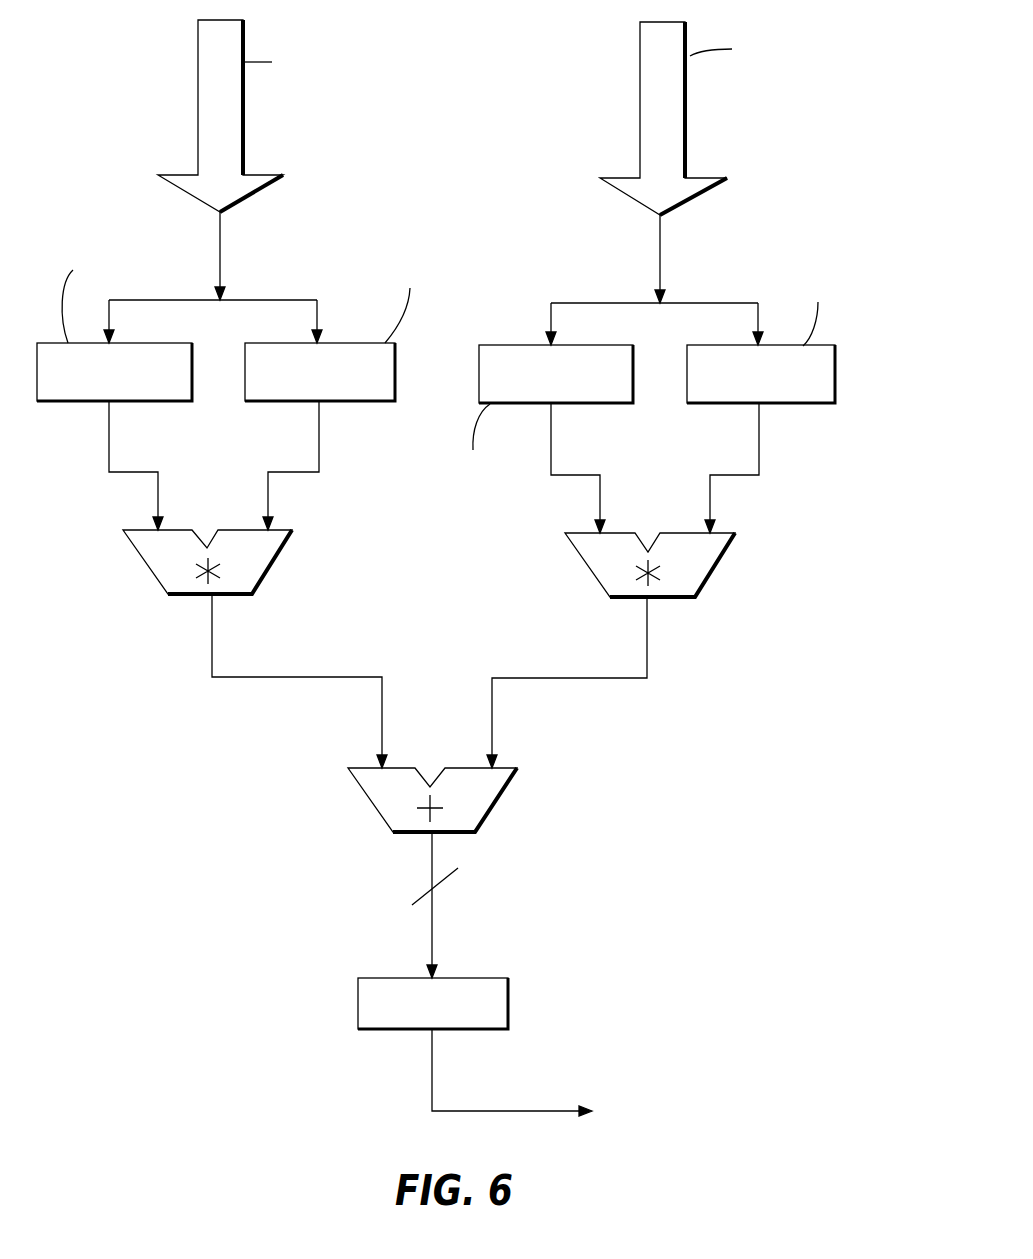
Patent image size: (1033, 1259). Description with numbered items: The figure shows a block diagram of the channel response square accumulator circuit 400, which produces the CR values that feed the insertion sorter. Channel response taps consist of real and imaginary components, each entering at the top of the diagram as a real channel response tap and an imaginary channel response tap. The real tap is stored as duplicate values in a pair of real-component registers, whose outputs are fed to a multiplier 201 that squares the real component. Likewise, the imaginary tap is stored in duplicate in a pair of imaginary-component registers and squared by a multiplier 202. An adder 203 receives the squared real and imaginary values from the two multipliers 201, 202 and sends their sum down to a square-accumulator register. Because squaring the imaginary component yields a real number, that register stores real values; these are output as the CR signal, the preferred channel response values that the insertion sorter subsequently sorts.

The circuit 400 is at (108, 65).
The multiplier 201 is at (158, 580).
The multiplier 202 is at (713, 572).
The adder 203 is at (500, 797).